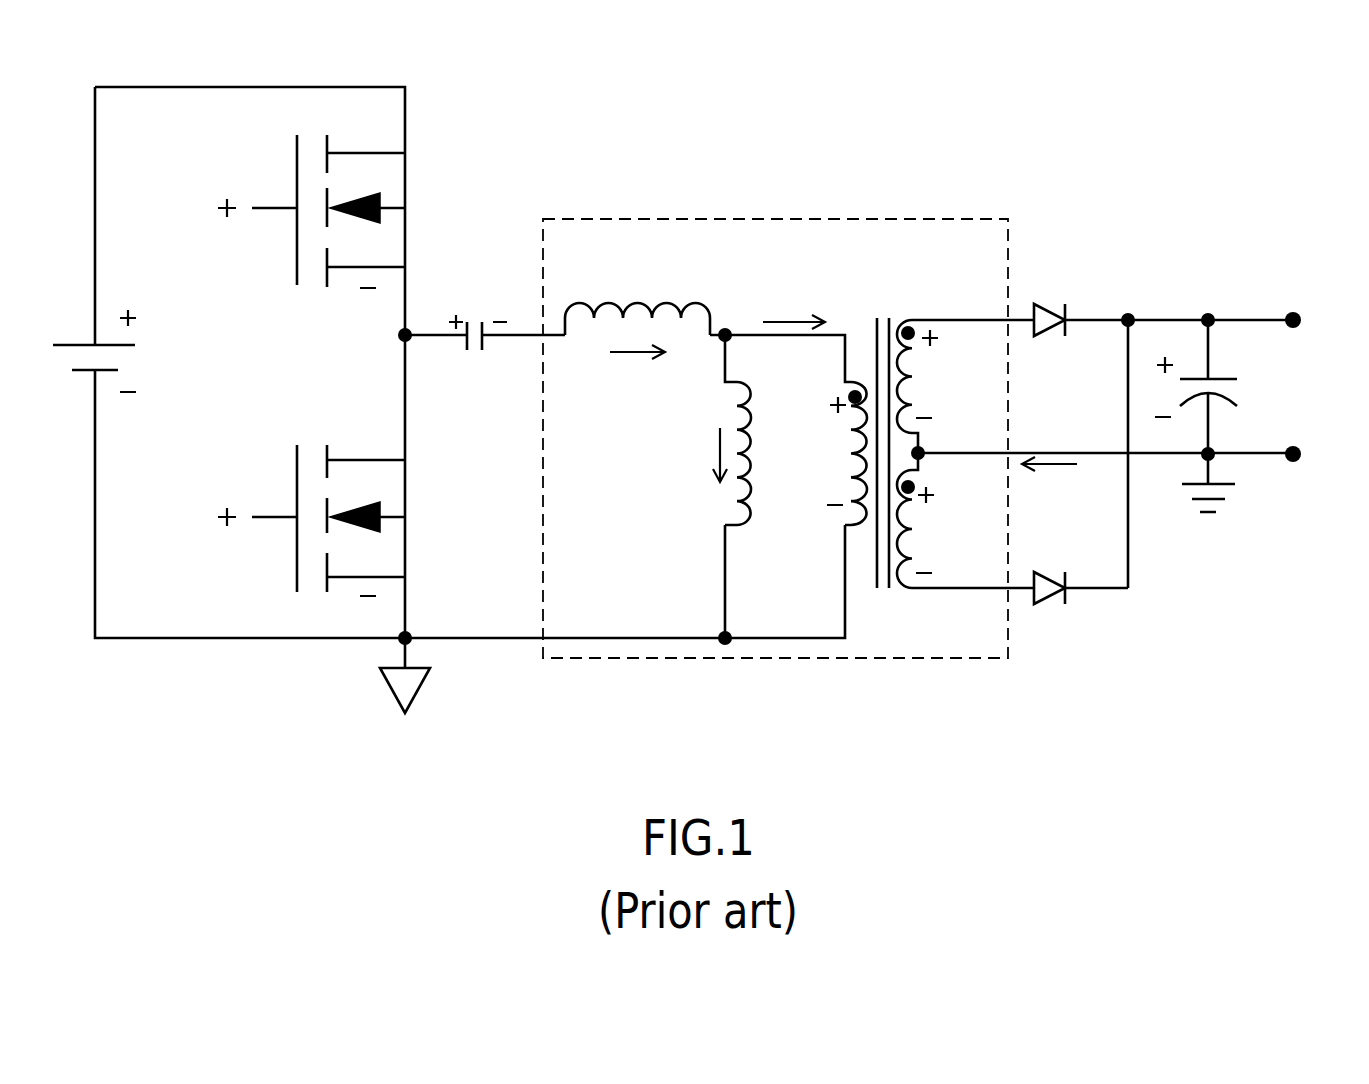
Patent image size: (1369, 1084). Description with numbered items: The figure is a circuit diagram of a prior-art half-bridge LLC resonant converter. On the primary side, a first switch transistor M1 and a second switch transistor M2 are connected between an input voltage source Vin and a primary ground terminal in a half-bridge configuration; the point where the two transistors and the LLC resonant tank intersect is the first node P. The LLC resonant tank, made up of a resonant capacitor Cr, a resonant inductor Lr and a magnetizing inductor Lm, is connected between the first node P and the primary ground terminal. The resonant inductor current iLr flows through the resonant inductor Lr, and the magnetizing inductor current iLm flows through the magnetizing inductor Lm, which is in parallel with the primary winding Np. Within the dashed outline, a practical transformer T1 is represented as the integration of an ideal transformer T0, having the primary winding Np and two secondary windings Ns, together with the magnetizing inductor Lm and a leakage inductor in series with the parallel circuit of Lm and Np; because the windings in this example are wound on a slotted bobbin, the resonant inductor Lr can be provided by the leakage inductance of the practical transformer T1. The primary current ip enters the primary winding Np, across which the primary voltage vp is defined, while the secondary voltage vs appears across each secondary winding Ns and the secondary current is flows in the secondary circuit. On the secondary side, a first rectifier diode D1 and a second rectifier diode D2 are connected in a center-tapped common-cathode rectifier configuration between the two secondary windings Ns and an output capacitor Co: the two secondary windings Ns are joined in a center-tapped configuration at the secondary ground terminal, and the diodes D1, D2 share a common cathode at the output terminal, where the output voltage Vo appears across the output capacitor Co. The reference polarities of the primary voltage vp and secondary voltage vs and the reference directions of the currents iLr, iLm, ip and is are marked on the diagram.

The input voltage source Vin is at (120, 351).
The first switch transistor M1 is at (336, 211).
The second switch transistor M2 is at (337, 520).
The first node P is at (397, 352).
The resonant capacitor Cr is at (478, 305).
The resonant inductor Lr is at (637, 296).
The magnetizing inductor Lm is at (768, 453).
The practical transformer T1 is at (878, 220).
The ideal transformer T0 is at (883, 427).
The primary winding Np is at (839, 453).
The secondary windings Ns is at (932, 454).
The first rectifier diode D1 is at (1049, 294).
The second rectifier diode D2 is at (1051, 614).
The output capacitor Co is at (1220, 387).
The output voltage Vo is at (1316, 375).
The resonant inductor current iLr is at (640, 371).
The magnetizing inductor current iLm is at (679, 455).
The primary current ip is at (797, 301).
The primary voltage vp is at (795, 357).
The secondary voltage vs is at (957, 381).
The secondary current is is at (1057, 485).